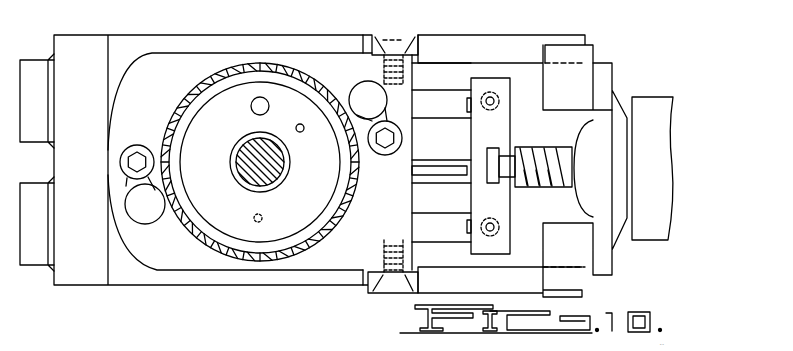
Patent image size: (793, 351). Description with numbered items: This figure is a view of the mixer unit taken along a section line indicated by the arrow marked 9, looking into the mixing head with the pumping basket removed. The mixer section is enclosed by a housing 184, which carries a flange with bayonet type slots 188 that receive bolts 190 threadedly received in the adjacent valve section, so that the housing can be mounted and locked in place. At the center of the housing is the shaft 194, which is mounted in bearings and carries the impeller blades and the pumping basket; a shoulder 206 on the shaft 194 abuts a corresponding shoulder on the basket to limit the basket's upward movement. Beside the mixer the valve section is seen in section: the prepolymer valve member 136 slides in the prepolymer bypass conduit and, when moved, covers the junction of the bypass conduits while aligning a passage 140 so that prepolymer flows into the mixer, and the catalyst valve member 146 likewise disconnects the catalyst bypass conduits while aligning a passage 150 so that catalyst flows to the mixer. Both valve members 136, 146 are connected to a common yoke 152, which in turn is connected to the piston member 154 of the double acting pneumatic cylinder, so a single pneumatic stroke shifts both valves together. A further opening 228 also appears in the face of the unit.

The section line of FIG. 9 is at (126, 350).
The prepolymer valve member 136 is at (443, 88).
The passage 140 is at (259, 97).
The catalyst valve member 146 is at (441, 213).
The passage 150 is at (266, 217).
The common yoke 152 is at (512, 141).
The piston member 154 is at (517, 188).
The housing 184 is at (214, 248).
The lobe slot 188 is at (135, 221).
The bolts 190 is at (137, 145).
The shaft 194 is at (270, 163).
The shoulder 206 is at (240, 137).
The small hole 228 is at (300, 124).